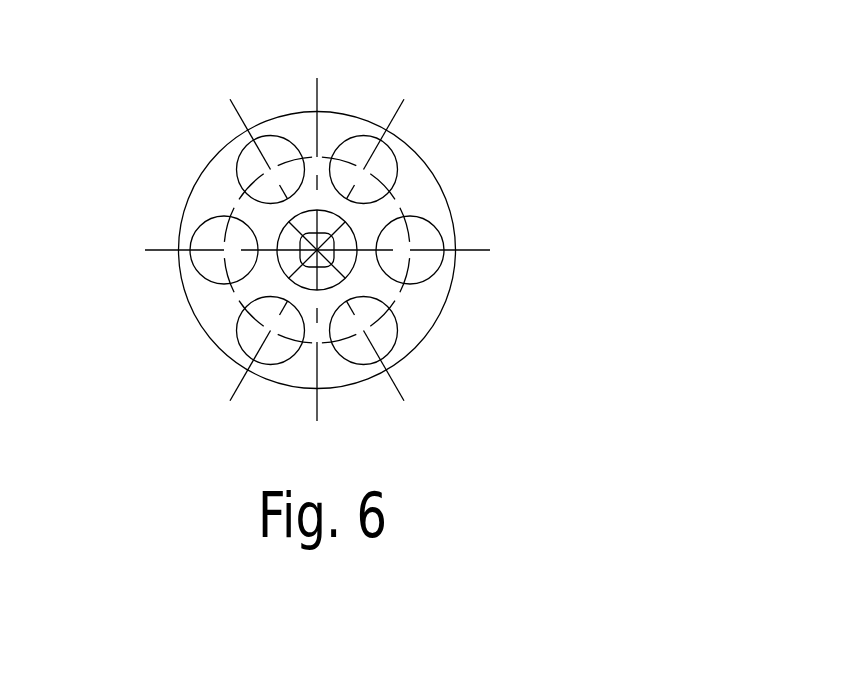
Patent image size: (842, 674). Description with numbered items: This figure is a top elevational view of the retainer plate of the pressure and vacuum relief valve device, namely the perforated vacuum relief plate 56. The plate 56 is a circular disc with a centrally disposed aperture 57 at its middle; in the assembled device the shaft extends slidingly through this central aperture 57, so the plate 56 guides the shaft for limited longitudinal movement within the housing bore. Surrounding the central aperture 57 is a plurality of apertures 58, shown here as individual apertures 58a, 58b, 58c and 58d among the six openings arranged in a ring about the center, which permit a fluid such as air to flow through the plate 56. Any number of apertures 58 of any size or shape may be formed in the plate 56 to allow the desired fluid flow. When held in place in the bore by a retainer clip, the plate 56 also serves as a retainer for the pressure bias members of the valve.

The perforated vacuum relief plate 56 is at (461, 84).
The centrally disposed aperture 57 is at (329, 242).
The apertures 58 is at (247, 308).
The aperture 58a is at (243, 160).
The aperture 58b is at (358, 146).
The aperture 58c is at (425, 240).
The aperture 58d is at (376, 335).